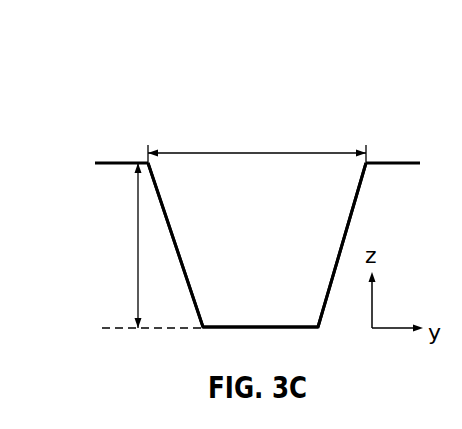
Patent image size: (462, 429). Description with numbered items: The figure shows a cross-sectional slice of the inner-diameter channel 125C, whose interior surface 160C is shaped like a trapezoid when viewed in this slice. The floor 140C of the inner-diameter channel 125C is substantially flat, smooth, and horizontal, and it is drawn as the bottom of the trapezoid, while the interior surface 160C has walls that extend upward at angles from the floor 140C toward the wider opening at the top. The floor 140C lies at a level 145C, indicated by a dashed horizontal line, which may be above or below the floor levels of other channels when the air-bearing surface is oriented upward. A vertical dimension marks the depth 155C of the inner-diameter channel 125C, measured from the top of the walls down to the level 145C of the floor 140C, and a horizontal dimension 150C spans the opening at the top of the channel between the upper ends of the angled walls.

The inner-diameter channel 125C is at (225, 100).
The floor 140C is at (225, 327).
The level 145C is at (118, 330).
The trench opening width 150C is at (280, 155).
The depth 155C is at (138, 243).
The interior surface 160C is at (335, 258).